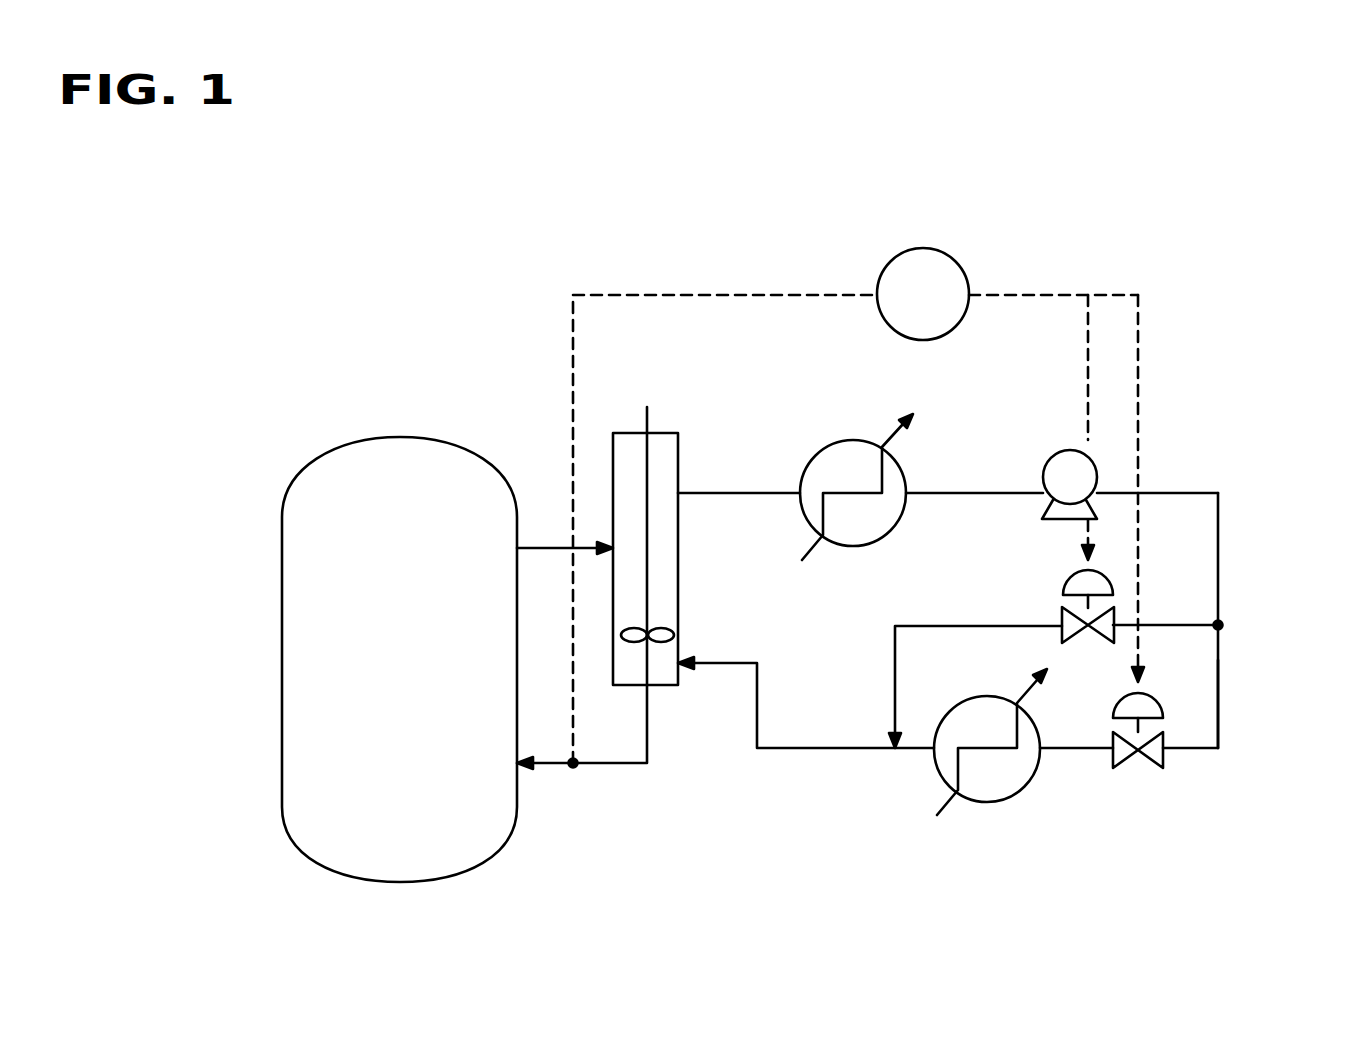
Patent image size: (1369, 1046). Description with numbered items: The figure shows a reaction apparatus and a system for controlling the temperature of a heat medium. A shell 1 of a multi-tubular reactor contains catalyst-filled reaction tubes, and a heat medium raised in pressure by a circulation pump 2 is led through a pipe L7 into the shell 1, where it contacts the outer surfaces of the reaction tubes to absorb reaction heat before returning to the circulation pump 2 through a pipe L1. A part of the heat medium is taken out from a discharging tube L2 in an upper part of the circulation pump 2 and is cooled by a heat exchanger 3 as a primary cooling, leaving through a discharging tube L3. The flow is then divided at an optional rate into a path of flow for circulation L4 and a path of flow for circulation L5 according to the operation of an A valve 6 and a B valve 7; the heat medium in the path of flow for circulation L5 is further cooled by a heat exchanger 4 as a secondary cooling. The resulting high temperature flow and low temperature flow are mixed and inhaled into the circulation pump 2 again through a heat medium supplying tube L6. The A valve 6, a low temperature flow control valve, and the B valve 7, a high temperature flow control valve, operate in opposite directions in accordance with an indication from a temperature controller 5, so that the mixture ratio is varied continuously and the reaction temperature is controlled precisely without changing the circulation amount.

The shell 1 is at (376, 437).
The circulation pump 2 is at (678, 585).
The heat exchanger 3 is at (826, 441).
The heat exchanger 4 is at (1013, 797).
The temperature controller (TC) 5 is at (901, 257).
The A valve 6 is at (1170, 815).
The B valve 7 is at (1060, 615).
The pipe L1 is at (555, 546).
The discharging tube L2 is at (752, 490).
The discharging tube L3 is at (1003, 490).
The path of flow for circulation L4 is at (962, 626).
The path of flow for circulation L5 is at (1218, 705).
The heat medium supplying tube L6 is at (797, 752).
The pipe L7 is at (627, 766).